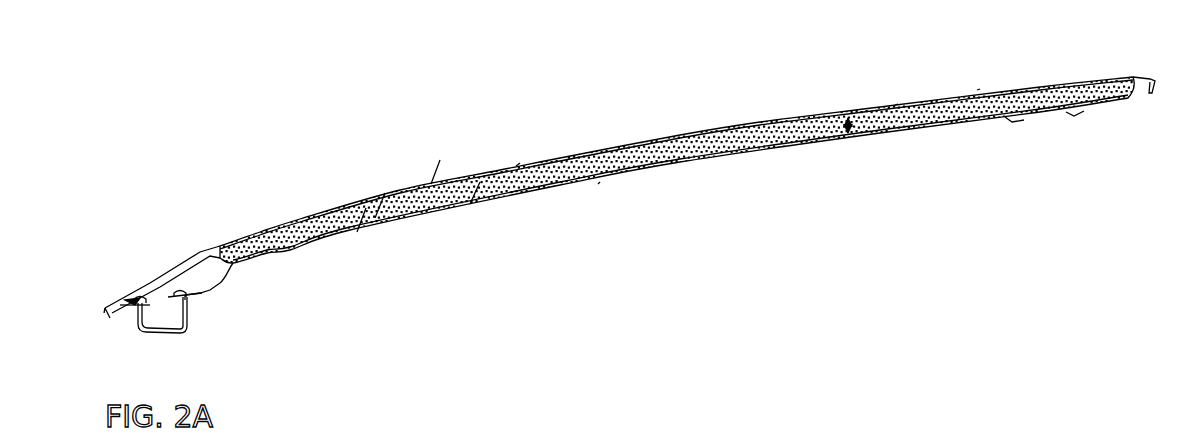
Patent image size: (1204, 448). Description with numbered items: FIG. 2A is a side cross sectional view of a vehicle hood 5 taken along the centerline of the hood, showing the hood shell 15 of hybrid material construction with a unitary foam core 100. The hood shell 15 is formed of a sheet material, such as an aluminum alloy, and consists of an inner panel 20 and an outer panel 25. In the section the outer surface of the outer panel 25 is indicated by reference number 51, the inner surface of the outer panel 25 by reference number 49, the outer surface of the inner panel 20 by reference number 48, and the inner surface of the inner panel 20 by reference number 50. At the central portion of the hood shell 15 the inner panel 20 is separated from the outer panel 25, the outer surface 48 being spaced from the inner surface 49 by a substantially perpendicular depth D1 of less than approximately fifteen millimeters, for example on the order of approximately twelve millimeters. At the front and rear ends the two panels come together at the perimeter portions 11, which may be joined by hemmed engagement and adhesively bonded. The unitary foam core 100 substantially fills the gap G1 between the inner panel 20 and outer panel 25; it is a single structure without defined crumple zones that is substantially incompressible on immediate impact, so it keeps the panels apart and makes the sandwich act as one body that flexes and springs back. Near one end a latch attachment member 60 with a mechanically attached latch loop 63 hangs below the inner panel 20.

In FIG. 2A, the vehicle hood 5 is at (268, 165).
In FIG. 2B, the vehicle hood 5 is at (990, 418).
In FIG. 2A, the perimeter portions 11 is at (104, 305).
In FIG. 2A, the hood shell 15 is at (630, 142).
In FIG. 2B, the hood shell 15 is at (805, 447).
In FIG. 2A, the inner panel 20 is at (598, 184).
In FIG. 2A, the outer panel 25 is at (517, 165).
In FIG. 2A, the outer surface of the inner panel 48 is at (385, 193).
In FIG. 2A, the inner surface of the outer panel 49 is at (357, 232).
In FIG. 2A, the inner surface of the inner panel 50 is at (470, 204).
In FIG. 2A, the outer surface of the outer panel 51 is at (431, 184).
In FIG. 2A, the latch attachment member 60 is at (227, 281).
In FIG. 2A, the latch loop 63 is at (182, 330).
In FIG. 2A, the unitary foam core 100 is at (895, 105).
In FIG. 2B, the unitary foam core 100 is at (895, 447).
In FIG. 2A, the depth D1 is at (824, 118).
In FIG. 2A, the gap G1 is at (977, 90).